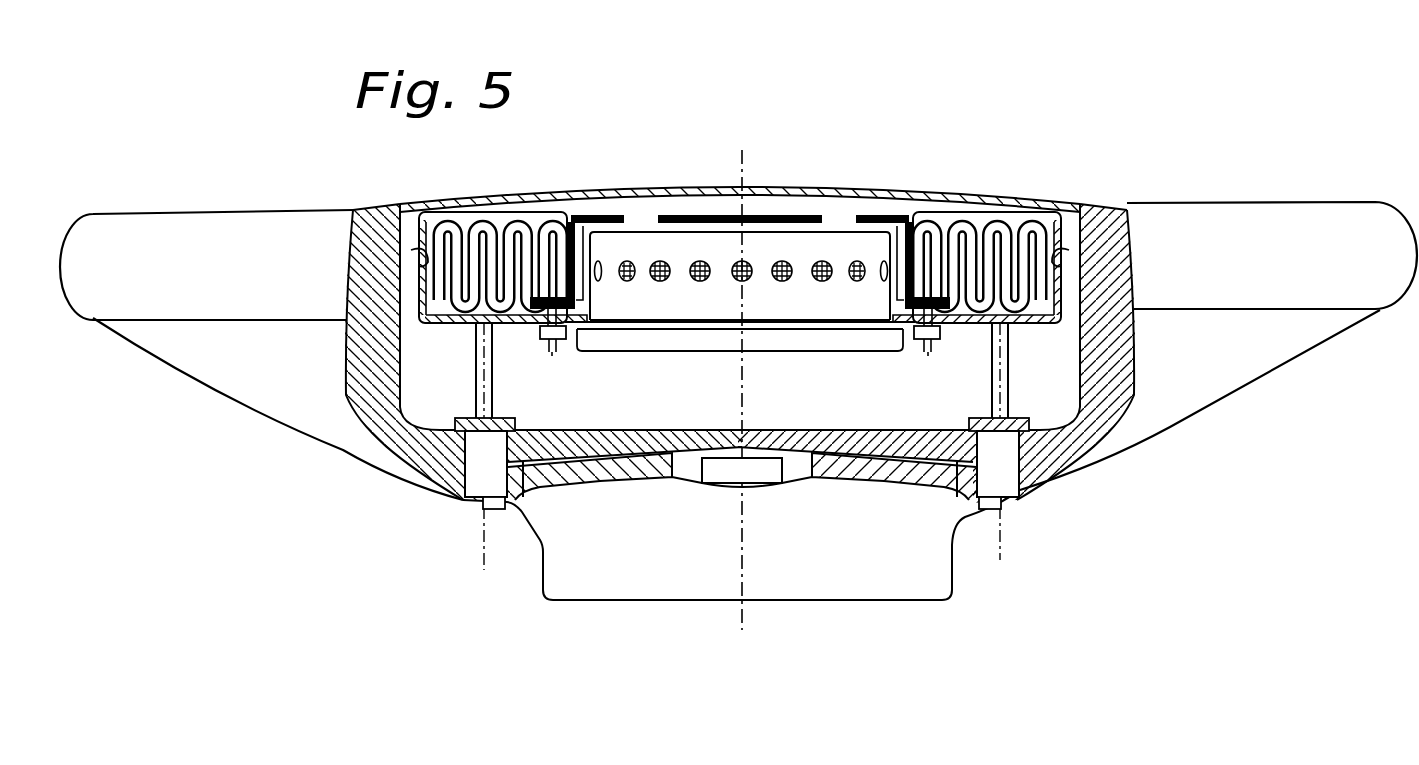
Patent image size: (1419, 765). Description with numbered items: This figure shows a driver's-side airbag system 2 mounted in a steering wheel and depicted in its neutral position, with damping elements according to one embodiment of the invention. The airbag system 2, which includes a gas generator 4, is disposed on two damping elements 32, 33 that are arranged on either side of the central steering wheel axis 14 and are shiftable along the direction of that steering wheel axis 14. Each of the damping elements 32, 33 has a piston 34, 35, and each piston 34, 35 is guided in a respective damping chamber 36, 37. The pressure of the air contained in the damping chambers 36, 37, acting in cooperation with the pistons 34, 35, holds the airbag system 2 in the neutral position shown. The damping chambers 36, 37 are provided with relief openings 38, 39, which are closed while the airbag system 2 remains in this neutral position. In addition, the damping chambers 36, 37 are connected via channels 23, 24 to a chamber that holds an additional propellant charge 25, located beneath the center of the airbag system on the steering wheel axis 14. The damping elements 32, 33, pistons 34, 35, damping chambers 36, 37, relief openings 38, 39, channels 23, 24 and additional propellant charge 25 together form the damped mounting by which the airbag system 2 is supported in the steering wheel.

The airbag system 2 is at (653, 190).
The gas generator 4 is at (843, 250).
The steering wheel axis 14 is at (747, 627).
The channel 23 is at (588, 455).
The channel 24 is at (905, 455).
The additional propellant charge 25 is at (720, 472).
The damping element 32 is at (480, 370).
The damping element 33 is at (1008, 368).
The piston 34 is at (470, 468).
The piston 35 is at (1020, 452).
The damping chamber 36 is at (453, 490).
The damping chamber 37 is at (1013, 463).
The relief opening 38 is at (502, 497).
The relief opening 39 is at (985, 500).